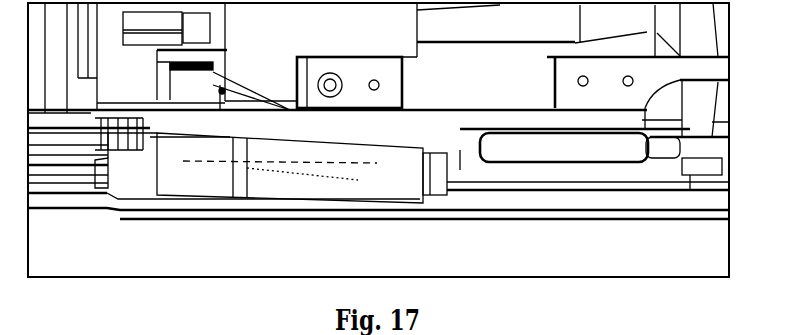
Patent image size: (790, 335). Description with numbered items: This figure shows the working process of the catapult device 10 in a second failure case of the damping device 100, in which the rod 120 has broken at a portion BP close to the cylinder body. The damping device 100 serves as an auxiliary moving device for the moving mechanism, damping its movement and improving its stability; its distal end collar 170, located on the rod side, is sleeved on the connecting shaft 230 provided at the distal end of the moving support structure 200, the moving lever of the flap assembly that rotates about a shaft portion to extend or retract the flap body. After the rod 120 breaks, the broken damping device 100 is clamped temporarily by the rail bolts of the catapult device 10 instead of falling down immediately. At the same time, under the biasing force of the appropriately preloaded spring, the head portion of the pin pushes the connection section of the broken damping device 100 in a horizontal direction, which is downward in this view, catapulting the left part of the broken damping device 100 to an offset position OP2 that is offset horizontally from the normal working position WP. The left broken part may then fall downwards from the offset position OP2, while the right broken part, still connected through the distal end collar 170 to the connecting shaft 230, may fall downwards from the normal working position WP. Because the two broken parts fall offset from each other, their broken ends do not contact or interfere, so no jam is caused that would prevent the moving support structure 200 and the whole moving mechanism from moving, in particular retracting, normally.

The catapult device 10 is at (150, 116).
The moving support structure 200 is at (302, 45).
The damping device 100 is at (306, 209).
The rod 120 is at (577, 156).
The distal end collar 170 is at (671, 146).
The connecting shaft 230 is at (695, 165).
The breaking portion BP is at (461, 167).
The normal working position WP is at (298, 163).
The offset position OP2 is at (324, 186).